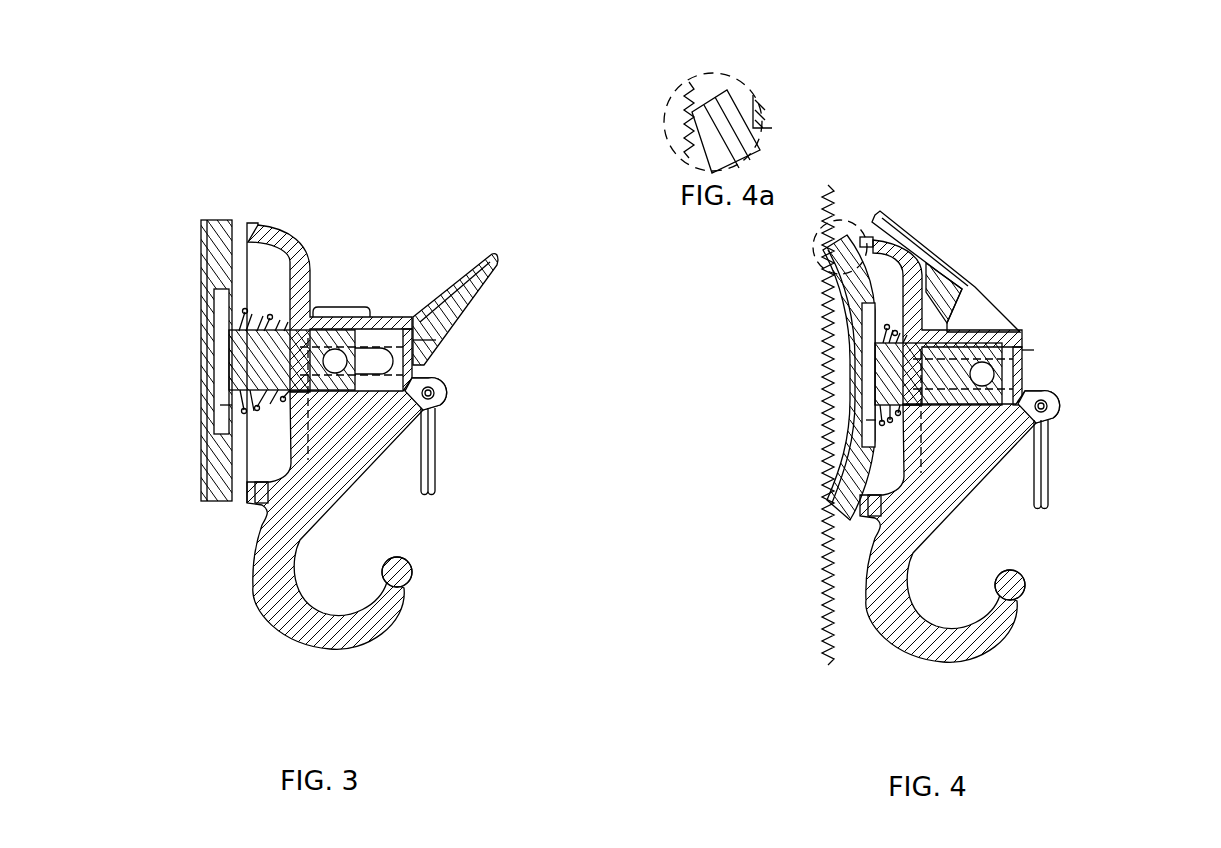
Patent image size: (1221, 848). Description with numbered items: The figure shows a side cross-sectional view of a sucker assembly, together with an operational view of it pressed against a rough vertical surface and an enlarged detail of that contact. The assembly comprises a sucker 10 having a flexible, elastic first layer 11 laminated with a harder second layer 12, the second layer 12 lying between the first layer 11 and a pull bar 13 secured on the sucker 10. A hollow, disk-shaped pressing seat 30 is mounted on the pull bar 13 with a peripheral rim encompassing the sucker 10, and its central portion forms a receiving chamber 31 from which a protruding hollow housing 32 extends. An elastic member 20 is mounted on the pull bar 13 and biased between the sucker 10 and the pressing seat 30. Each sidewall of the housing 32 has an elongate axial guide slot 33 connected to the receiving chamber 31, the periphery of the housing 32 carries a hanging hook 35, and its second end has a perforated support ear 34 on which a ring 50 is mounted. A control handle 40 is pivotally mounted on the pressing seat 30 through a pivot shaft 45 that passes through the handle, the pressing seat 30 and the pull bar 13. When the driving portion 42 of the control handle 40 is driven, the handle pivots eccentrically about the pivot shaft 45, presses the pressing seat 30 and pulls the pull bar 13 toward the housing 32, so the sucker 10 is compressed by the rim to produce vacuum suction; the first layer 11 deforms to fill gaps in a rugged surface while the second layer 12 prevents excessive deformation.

In FIG. 3, the sucker 10 is at (133, 349).
In FIG. 4, the sucker 10 is at (787, 371).
In FIG. 3, the first layer 11 is at (139, 349).
In FIG. 4, the first layer 11 is at (791, 371).
In FIG. 4a, the first layer 11 is at (703, 135).
In FIG. 3, the second layer 12 is at (207, 282).
In FIG. 4, the second layer 12 is at (835, 292).
In FIG. 4a, the second layer 12 is at (713, 102).
In FIG. 3, the pull bar 13 is at (320, 330).
In FIG. 4, the pull bar 13 is at (965, 332).
In FIG. 3, the elastic member 20 is at (225, 407).
In FIG. 4, the elastic member 20 is at (862, 421).
In FIG. 3, the pressing seat 30 is at (423, 534).
In FIG. 4, the pressing seat 30 is at (1035, 549).
In FIG. 4a, the pressing seat 30 is at (758, 112).
In FIG. 3, the receiving chamber 31 is at (290, 315).
In FIG. 4, the receiving chamber 31 is at (941, 321).
In FIG. 3, the housing 32 is at (385, 317).
In FIG. 4, the housing 32 is at (1022, 332).
In FIG. 3, the guide slot 33 is at (441, 352).
In FIG. 4, the guide slot 33 is at (1020, 358).
In FIG. 3, the support ear 34 is at (438, 382).
In FIG. 4, the support ear 34 is at (1050, 397).
In FIG. 3, the hanging hook 35 is at (385, 617).
In FIG. 4, the hanging hook 35 is at (1000, 632).
In FIG. 3, the control handle 40 is at (514, 274).
In FIG. 4, the control handle 40 is at (1011, 224).
In FIG. 3, the driving portion 42 is at (442, 305).
In FIG. 4, the driving portion 42 is at (887, 224).
In FIG. 3, the pivot shaft 45 is at (292, 393).
In FIG. 4, the pivot shaft 45 is at (1010, 423).
In FIG. 3, the ring 50 is at (442, 447).
In FIG. 4, the ring 50 is at (1053, 463).